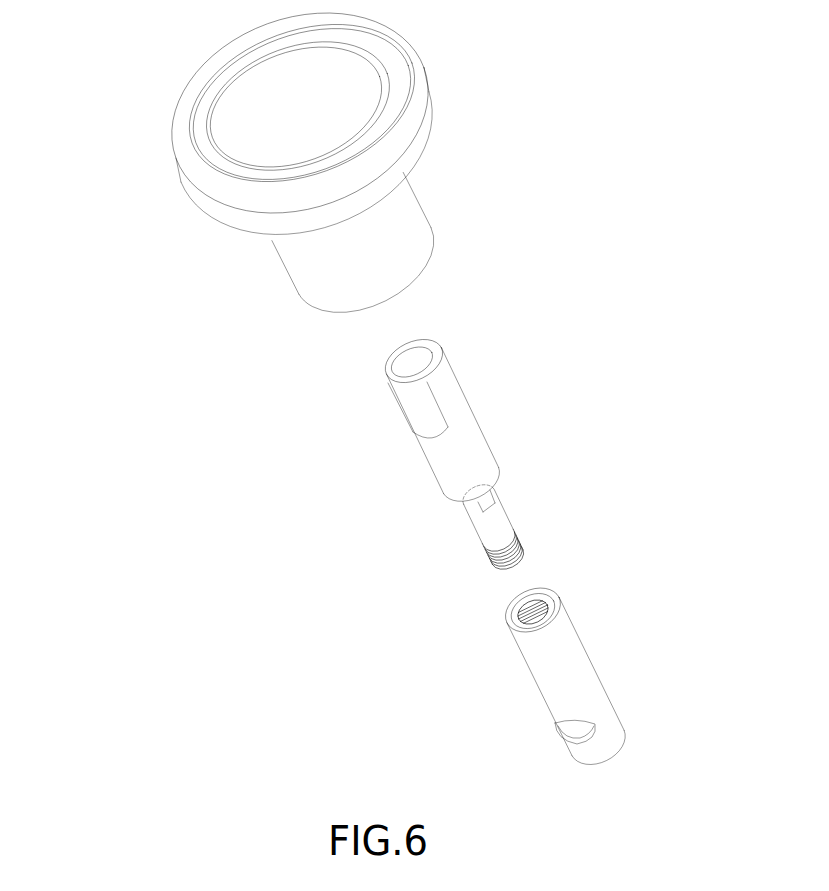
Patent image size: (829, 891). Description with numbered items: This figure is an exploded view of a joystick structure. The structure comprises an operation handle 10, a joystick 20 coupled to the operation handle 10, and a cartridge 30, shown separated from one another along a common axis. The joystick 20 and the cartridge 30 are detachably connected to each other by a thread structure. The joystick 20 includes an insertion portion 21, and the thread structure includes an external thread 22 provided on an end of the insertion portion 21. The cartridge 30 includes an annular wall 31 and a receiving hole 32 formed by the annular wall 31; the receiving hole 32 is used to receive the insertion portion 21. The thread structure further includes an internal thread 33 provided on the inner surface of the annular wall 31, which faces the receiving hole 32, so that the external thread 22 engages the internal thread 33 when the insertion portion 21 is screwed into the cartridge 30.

The operation handle 10 is at (181, 185).
The joystick 20 is at (413, 431).
The insertion portion 21 is at (470, 521).
The external thread 22 is at (518, 541).
The cartridge 30 is at (627, 669).
The annular wall 31 is at (532, 679).
The receiving hole 32 is at (518, 613).
The internal thread 33 is at (533, 598).